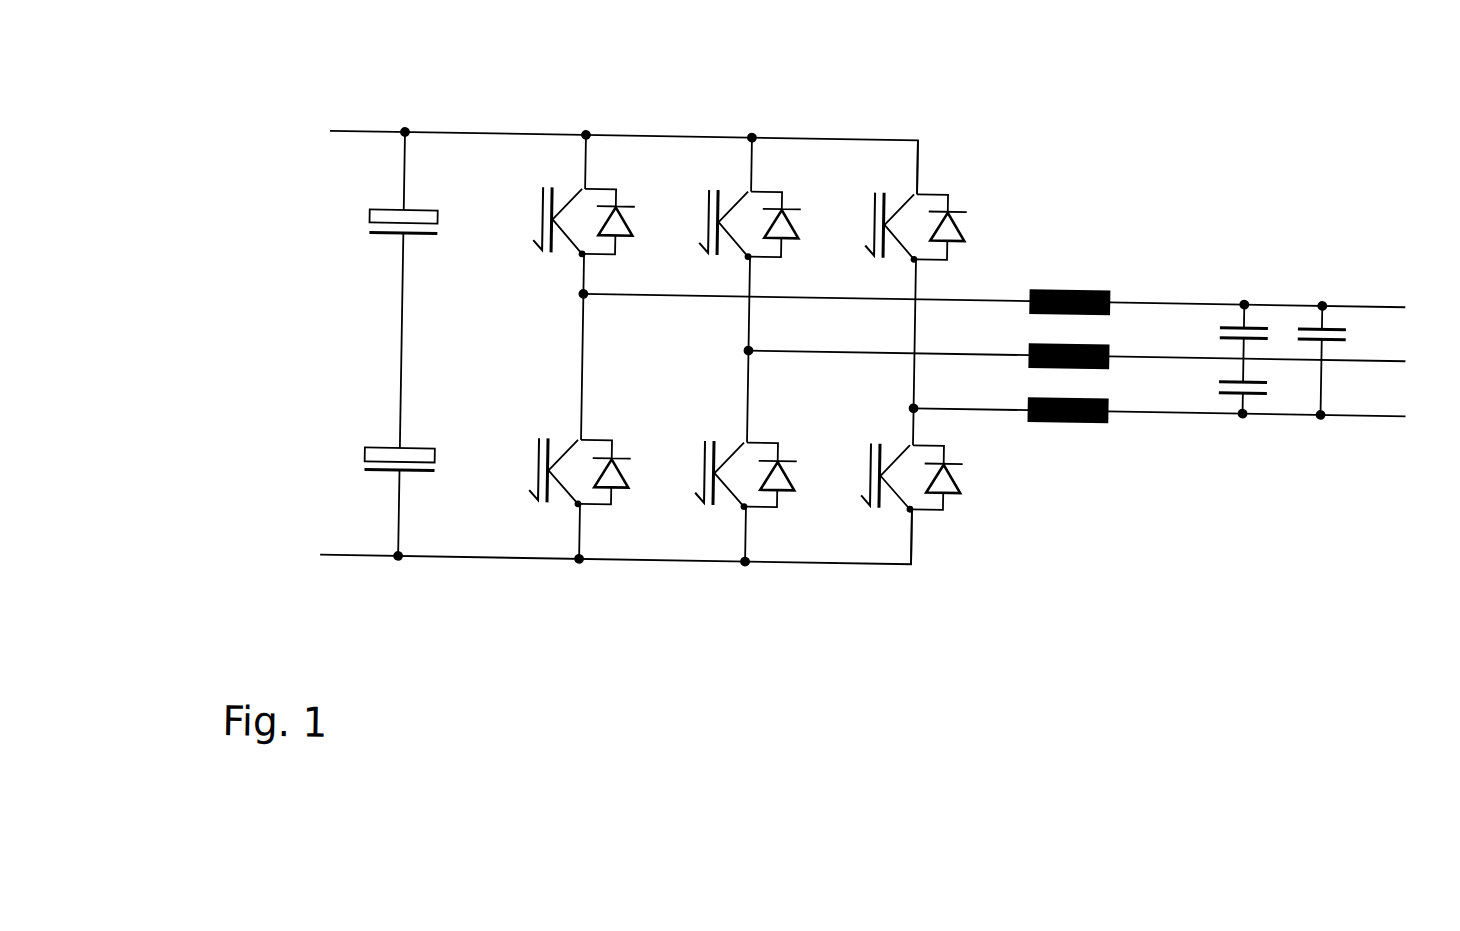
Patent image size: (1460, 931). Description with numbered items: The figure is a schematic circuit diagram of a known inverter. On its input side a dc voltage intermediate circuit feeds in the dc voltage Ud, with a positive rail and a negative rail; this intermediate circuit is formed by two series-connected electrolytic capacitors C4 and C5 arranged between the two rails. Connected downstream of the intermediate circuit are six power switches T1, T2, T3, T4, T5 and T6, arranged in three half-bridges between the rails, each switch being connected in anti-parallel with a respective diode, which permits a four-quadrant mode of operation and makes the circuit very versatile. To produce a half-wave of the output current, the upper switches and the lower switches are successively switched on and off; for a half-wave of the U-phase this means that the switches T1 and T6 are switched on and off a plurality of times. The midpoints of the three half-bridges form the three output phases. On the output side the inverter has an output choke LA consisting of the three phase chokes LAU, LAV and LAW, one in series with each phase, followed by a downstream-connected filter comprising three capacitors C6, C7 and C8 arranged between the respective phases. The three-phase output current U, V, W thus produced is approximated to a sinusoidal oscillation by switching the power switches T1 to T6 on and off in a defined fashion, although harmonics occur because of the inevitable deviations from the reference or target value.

The dc voltage Ud is at (289, 558).
The electrolytic capacitor C4 is at (319, 219).
The electrolytic capacitor C5 is at (378, 448).
The power switch T1 is at (584, 196).
The power switch T2 is at (745, 475).
The power switch T3 is at (750, 227).
The power switch T4 is at (911, 505).
The power switch T5 is at (916, 257).
The power switch T6 is at (580, 446).
The output choke LA is at (911, 334).
The output choke of the U-phase LAU is at (912, 286).
The output choke of the V-phase LAV is at (994, 340).
The output choke of the W-phase LAW is at (1076, 394).
The filter capacitor C6 is at (1243, 312).
The filter capacitor C7 is at (1321, 343).
The filter capacitor C8 is at (1243, 406).
The U-phase of the three-phase output current U is at (1341, 308).
The V-phase of the three-phase output current V is at (1340, 360).
The W-phase of the three-phase output current W is at (1343, 418).